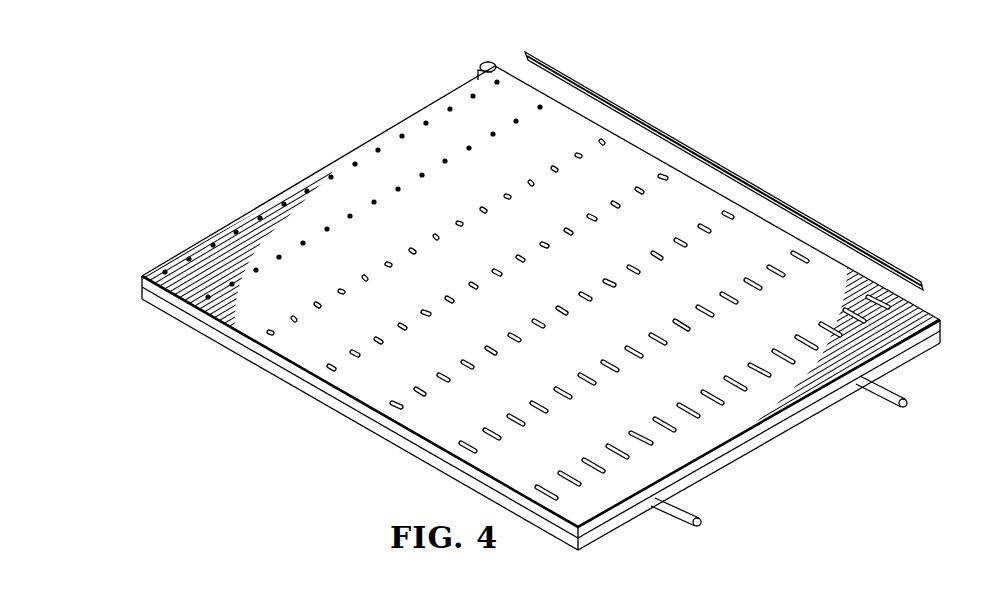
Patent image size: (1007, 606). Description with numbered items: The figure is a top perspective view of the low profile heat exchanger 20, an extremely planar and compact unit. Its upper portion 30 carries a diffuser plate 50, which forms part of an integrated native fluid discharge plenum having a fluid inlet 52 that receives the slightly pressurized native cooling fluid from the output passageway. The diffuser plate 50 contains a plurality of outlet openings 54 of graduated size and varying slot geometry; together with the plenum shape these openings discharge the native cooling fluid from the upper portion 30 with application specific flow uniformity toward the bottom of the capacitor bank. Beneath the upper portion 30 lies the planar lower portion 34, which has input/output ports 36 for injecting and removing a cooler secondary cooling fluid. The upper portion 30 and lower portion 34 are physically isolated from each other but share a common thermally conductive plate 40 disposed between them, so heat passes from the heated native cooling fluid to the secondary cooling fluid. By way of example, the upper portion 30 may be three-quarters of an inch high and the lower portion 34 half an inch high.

The heat exchanger 20 is at (295, 104).
The upper portion 30 is at (237, 339).
The planar lower portion 34 is at (315, 393).
The input/output ports 36 is at (888, 403).
The thermally conductive plate 40 is at (450, 468).
The diffuser plate 50 is at (435, 425).
The fluid inlet 52 is at (481, 64).
The outlet openings 54 is at (731, 172).